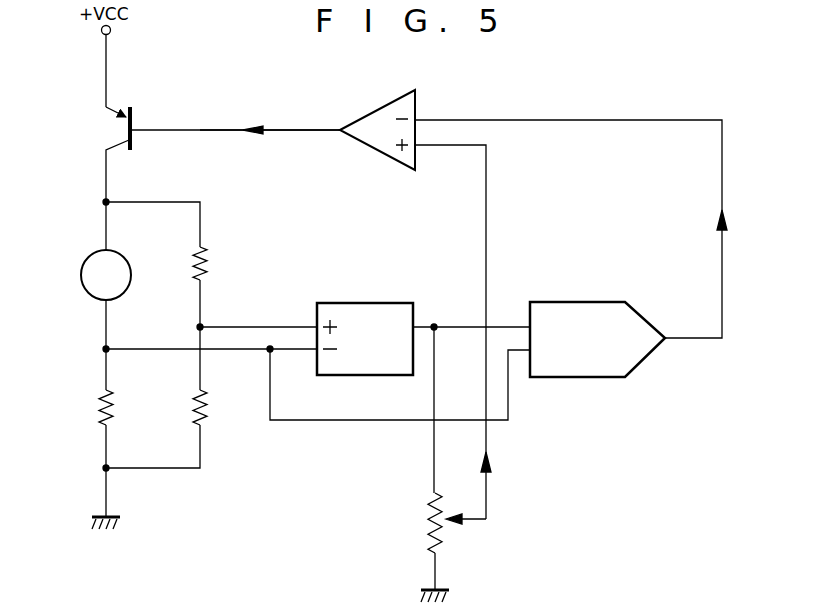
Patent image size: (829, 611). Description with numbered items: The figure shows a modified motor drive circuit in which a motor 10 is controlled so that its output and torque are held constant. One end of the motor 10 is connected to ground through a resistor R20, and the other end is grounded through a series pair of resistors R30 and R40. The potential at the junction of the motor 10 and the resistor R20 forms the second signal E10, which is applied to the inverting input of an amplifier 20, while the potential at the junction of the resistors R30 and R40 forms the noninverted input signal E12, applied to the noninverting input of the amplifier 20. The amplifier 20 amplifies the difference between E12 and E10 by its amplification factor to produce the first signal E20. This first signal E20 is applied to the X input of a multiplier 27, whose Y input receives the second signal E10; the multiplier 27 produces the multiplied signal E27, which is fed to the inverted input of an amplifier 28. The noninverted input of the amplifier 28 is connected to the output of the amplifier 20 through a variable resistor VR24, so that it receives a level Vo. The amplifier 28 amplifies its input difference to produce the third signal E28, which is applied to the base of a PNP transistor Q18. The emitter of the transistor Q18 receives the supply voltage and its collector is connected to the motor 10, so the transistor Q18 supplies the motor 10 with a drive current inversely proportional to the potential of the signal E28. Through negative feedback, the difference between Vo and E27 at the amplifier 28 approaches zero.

The motor 10 is at (84, 266).
The PNP transistor Q18 is at (120, 108).
The third signal E28 is at (290, 128).
The amplifier 28 is at (372, 116).
The multiplied signal E27 is at (722, 168).
The multiplier 27 is at (578, 308).
The amplifier 20 is at (370, 307).
The first signal E20 is at (434, 325).
The resistor R30 is at (213, 262).
The noninverted input signal E12 is at (205, 322).
The resistor R20 is at (103, 407).
The resistor R40 is at (198, 397).
The second signal E10 is at (268, 352).
The variable resistor VR24 is at (427, 532).
The input signal level of amplifier 28 VO is at (487, 495).